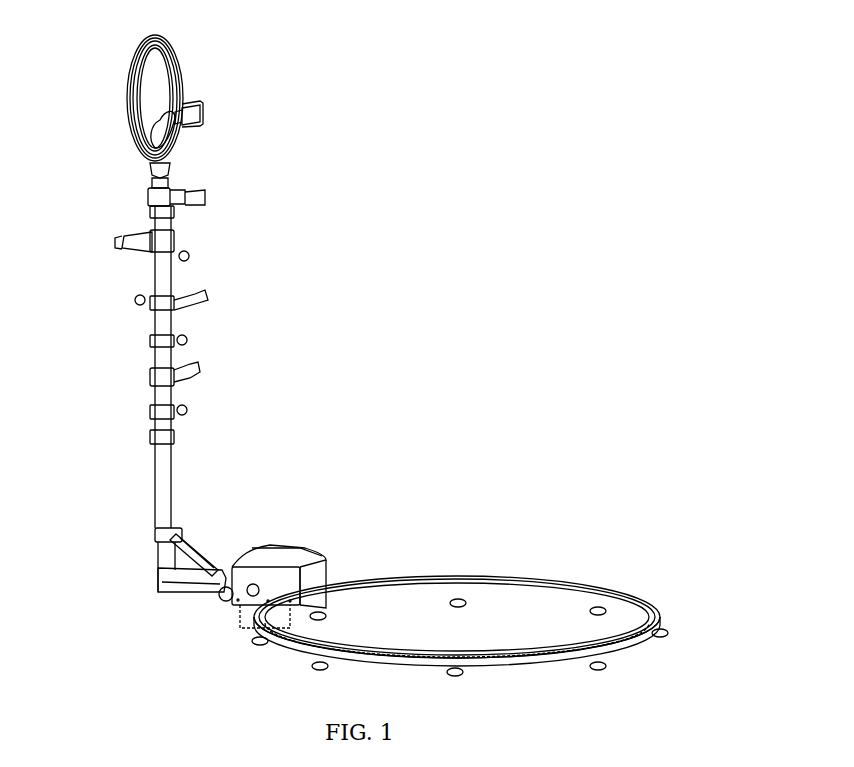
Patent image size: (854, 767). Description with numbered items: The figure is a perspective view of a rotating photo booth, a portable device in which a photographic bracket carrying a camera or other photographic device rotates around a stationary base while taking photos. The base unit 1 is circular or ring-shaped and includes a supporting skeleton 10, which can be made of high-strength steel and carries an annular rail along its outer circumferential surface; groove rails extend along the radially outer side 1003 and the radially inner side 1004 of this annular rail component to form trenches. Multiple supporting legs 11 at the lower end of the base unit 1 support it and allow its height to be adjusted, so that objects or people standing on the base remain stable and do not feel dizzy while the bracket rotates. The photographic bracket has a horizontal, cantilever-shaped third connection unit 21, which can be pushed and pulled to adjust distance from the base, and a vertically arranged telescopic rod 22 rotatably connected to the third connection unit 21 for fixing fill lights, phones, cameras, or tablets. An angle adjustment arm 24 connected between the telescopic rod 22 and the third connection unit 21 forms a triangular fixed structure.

The base unit 1 is at (617, 580).
The supporting skeleton 10 is at (682, 600).
The radially outer side 1003 is at (663, 625).
The radially inner side 1004 is at (497, 577).
The supporting legs 11 is at (605, 665).
The third connection unit 21 is at (180, 597).
The telescopic rod 22 is at (155, 398).
The angle adjustment arm 24 is at (210, 570).